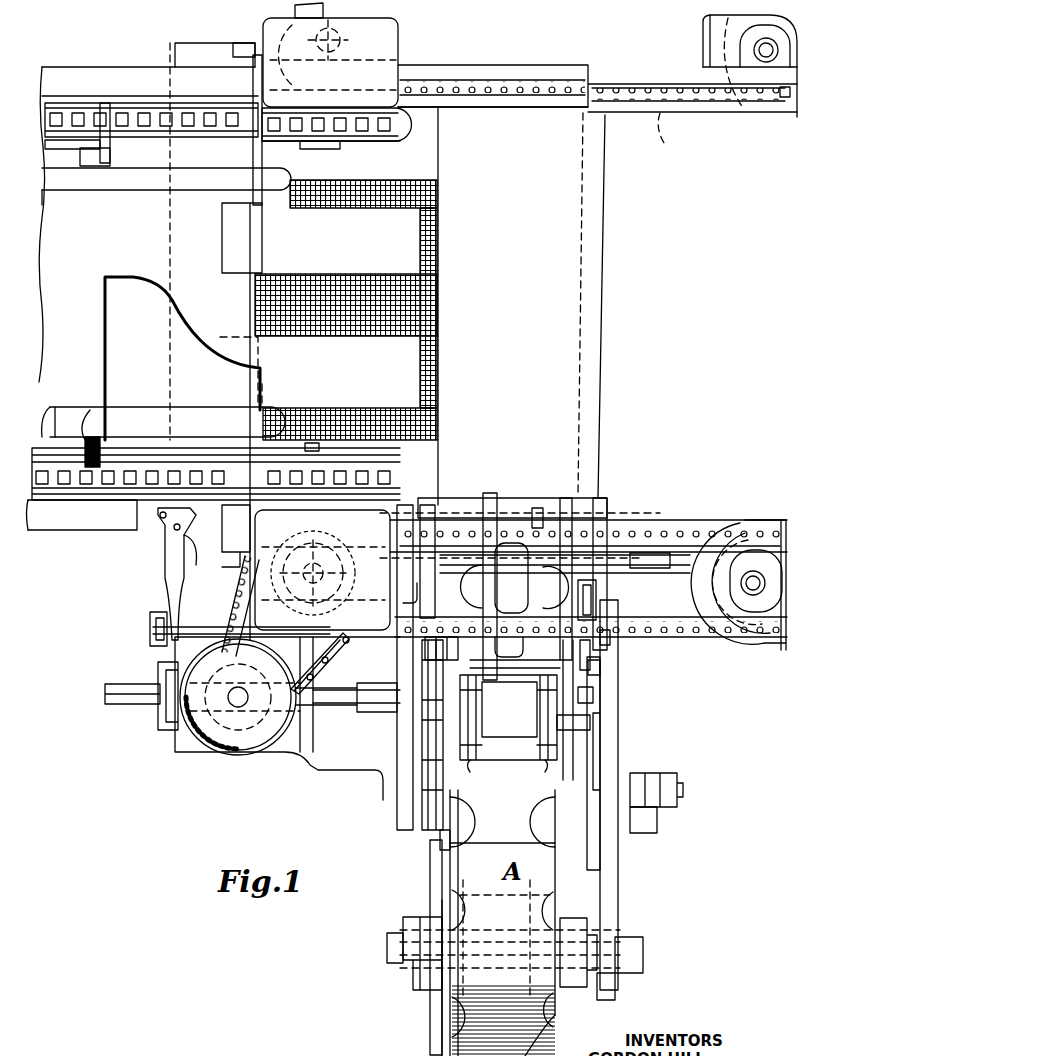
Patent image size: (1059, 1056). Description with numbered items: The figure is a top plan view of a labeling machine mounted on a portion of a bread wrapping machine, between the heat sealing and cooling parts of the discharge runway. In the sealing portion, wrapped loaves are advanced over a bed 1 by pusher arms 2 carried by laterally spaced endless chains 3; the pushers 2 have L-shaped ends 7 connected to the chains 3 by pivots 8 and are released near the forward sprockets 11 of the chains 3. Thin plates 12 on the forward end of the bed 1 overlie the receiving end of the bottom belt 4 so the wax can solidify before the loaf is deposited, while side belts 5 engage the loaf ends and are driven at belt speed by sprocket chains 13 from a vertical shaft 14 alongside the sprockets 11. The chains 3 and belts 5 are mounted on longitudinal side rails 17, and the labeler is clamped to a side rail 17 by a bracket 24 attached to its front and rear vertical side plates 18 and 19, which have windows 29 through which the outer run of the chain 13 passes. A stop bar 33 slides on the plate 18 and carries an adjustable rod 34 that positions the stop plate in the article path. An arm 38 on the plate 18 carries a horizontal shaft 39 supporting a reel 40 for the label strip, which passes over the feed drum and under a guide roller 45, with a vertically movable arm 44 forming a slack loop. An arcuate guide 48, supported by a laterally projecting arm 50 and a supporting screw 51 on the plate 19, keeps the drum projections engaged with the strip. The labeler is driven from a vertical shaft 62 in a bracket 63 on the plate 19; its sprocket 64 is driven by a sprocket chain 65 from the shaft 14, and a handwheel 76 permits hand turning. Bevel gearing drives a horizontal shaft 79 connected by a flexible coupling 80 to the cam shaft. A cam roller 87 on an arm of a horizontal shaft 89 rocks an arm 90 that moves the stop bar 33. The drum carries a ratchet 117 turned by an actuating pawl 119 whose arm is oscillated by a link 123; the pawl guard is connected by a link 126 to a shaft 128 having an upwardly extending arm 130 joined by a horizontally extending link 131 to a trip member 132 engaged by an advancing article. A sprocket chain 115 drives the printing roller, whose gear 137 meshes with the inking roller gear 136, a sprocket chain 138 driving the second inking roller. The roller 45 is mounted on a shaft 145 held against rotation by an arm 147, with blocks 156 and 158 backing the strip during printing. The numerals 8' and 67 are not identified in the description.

The bed 1 is at (72, 268).
The pusher arms 2 is at (118, 185).
The endless chains 3 is at (122, 132).
The bottom belt 4 is at (326, 320).
The side belts 5 is at (783, 120).
The L-shaped ends 7 is at (73, 164).
The pivots 8 is at (55, 400).
The bar 8' is at (60, 194).
The forward sprockets 11 is at (343, 150).
The thin plates 12 is at (369, 212).
The sprocket chains 13 is at (708, 655).
The vertical shaft 14 is at (372, 45).
The longitudinal side rails 17 is at (112, 72).
The front vertical side plate 18 is at (620, 745).
The rear vertical side plate 19 is at (397, 810).
The bracket 24 is at (518, 493).
The windows 29 is at (423, 587).
The stop bar 33 is at (632, 607).
The rod 34 is at (673, 553).
The arm 38 is at (614, 908).
The horizontal shaft 39 is at (646, 960).
The reel 40 is at (443, 1018).
The vertically movable arm 44 is at (428, 902).
The guide roller 45 is at (508, 730).
The arcuate guide 48 is at (548, 522).
The laterally projecting arm 50 is at (602, 655).
The supporting screw 51 is at (617, 640).
The vertical shaft 62 is at (239, 688).
The bracket 63 is at (313, 780).
The sprocket 64 is at (254, 606).
The sprocket chain 65 is at (341, 666).
The flange 67 is at (239, 758).
The handwheel 76 is at (217, 740).
The horizontal shaft 79 is at (342, 712).
The flexible coupling 80 is at (374, 714).
The roller 87 is at (575, 786).
The horizontal shaft 89 is at (685, 788).
The arm 90 is at (657, 828).
The sprocket chain 115 is at (397, 685).
The ratchet 117 is at (587, 560).
The actuating pawl 119 is at (553, 671).
The link 123 is at (593, 697).
The link 126 is at (605, 677).
The shaft 128 is at (207, 628).
The upwardly extending arm 130 is at (152, 654).
The horizontally extending link 131 is at (168, 583).
The trip member 132 is at (167, 549).
The gear 136 is at (429, 838).
The gear 137 is at (425, 775).
The sprocket chain 138 is at (434, 845).
The shaft 145 is at (592, 720).
The arm 147 is at (605, 765).
The block 156 is at (547, 770).
The block 158 is at (476, 762).